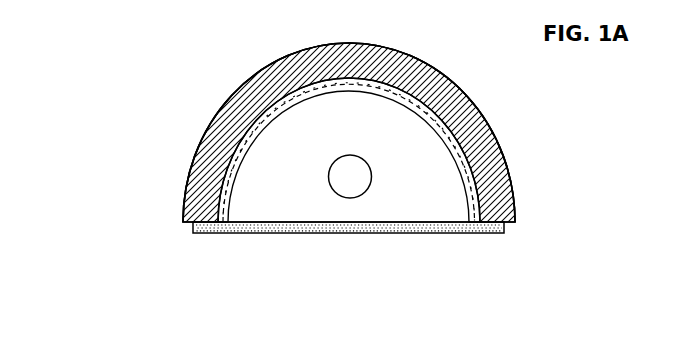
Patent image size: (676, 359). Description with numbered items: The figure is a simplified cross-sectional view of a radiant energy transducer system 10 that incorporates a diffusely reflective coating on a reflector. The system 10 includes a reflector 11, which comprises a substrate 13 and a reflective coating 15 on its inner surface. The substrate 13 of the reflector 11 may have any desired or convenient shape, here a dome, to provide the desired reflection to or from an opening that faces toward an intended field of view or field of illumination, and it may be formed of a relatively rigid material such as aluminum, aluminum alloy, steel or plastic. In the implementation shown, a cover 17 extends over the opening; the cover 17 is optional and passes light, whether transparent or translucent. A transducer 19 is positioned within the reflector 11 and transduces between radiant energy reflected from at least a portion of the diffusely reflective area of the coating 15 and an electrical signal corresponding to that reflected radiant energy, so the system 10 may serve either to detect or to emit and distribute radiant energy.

The radiant energy transducer system 10 is at (138, 77).
The reflector 11 is at (195, 162).
The substrate 13 is at (507, 163).
The reflective coating 15 is at (349, 184).
The cover 17 is at (217, 235).
The transducer 19 is at (347, 199).